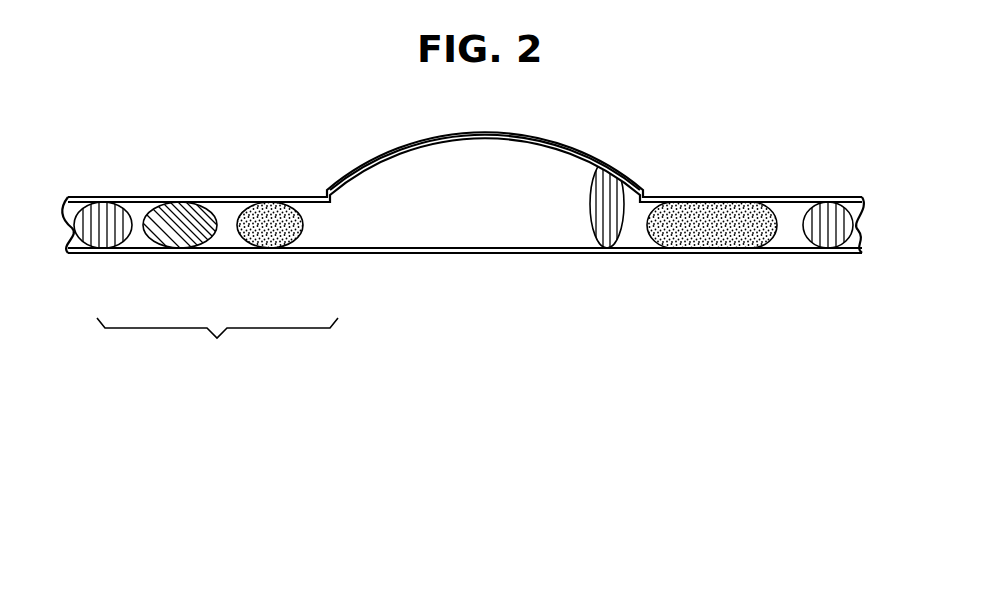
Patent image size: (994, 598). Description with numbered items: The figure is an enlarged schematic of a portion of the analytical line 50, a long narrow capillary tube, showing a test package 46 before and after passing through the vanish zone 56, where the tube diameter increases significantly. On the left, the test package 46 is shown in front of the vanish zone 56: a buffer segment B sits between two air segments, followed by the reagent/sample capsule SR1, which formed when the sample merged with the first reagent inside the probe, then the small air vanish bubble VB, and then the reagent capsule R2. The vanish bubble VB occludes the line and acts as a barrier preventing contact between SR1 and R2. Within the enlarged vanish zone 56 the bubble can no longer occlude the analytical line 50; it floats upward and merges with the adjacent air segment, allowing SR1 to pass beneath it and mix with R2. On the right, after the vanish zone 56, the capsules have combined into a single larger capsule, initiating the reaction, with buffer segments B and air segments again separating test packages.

The analytical line 50 is at (82, 198).
The vanish zone 56 is at (500, 133).
The test package 46 is at (217, 343).
The reagent/sample capsule SR1 is at (178, 237).
The reagent aliquot R2 is at (273, 237).
The vanish bubble VB is at (228, 208).